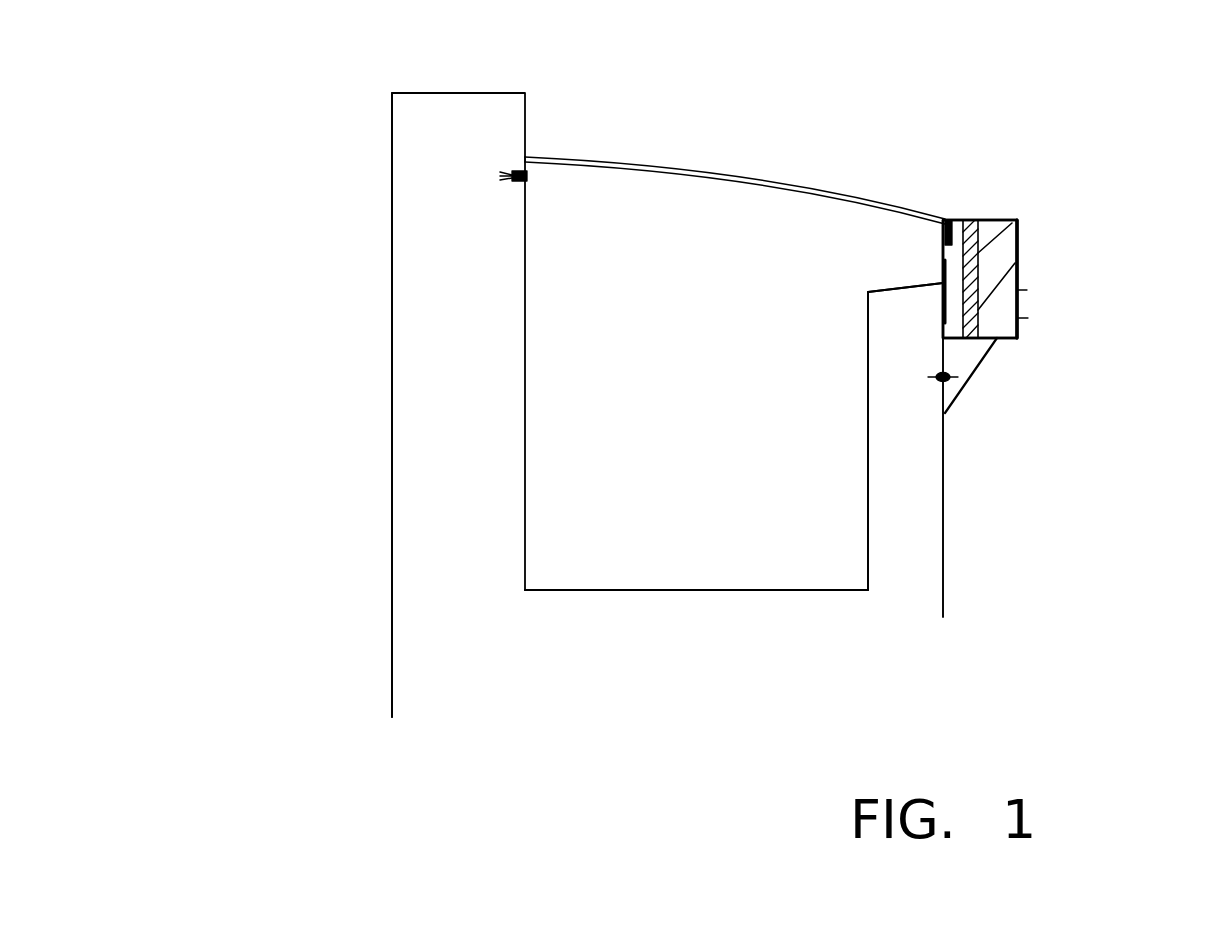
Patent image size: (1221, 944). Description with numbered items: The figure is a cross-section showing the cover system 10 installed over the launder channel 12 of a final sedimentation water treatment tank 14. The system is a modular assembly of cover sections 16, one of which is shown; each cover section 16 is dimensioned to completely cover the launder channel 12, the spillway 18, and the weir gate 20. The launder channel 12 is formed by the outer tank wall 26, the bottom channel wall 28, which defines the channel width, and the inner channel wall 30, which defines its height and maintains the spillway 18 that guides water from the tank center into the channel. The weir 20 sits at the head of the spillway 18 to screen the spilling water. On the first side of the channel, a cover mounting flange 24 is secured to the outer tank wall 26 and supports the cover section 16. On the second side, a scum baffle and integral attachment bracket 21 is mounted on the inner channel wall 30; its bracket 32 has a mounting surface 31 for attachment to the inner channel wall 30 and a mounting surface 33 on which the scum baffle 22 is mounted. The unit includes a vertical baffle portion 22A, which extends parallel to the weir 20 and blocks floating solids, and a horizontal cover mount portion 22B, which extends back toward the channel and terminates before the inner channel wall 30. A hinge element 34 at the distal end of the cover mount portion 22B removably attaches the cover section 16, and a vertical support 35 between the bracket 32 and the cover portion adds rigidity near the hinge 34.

The cover system 10 is at (318, 131).
The launder channel 12 is at (730, 533).
The final sedimentation water treatment tank 14 is at (490, 617).
The cover section 16 is at (683, 168).
The spillway 18 is at (885, 291).
The weir gate 20 is at (942, 268).
The scum baffle and integral attachment bracket 21 is at (1120, 208).
The scum baffle 22 is at (1016, 342).
The vertical baffle portion 22A is at (1020, 226).
The horizontal cover mount portion 22B is at (988, 218).
The cover mounting flange 24 is at (540, 163).
The outer tank wall 26 is at (405, 375).
The bottom channel wall 28 is at (673, 591).
The inner channel wall 30 is at (868, 523).
The mounting surface 31 is at (948, 412).
The integral attachment bracket 32 is at (980, 343).
The mounting surface 33 is at (1018, 327).
The hinge element 34 is at (947, 218).
The vertical support 35 is at (1010, 218).